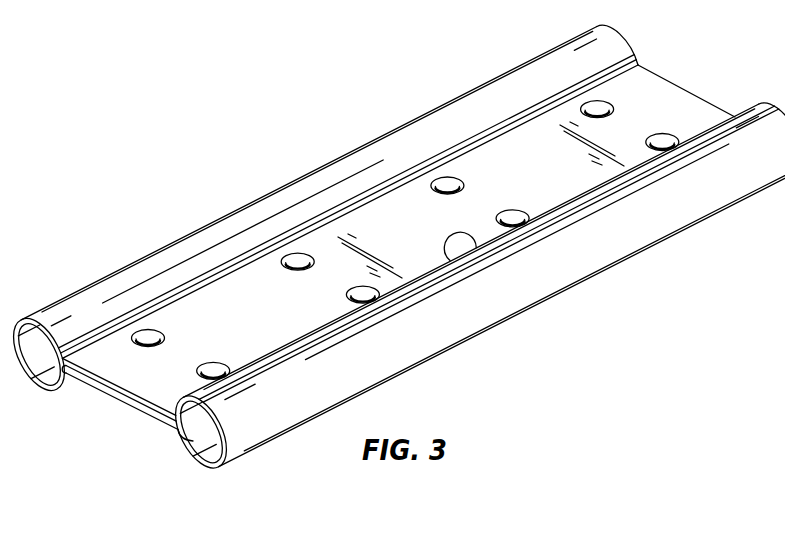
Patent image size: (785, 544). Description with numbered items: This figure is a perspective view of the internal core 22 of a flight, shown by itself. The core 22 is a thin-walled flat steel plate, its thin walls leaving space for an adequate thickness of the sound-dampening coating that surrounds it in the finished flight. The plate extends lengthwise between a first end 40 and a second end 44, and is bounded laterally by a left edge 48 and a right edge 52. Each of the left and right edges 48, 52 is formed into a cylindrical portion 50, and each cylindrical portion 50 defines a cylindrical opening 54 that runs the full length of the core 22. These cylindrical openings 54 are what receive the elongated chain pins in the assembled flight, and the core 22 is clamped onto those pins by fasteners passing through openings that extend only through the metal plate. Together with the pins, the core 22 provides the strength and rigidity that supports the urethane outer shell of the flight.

The core 22 is at (394, 270).
The first end 40 is at (117, 404).
The second end 44 is at (686, 91).
The left edge 48 is at (200, 287).
The cylindrical portion 50 is at (285, 403).
The right edge 52 is at (483, 246).
The cylindrical opening 54 is at (193, 438).